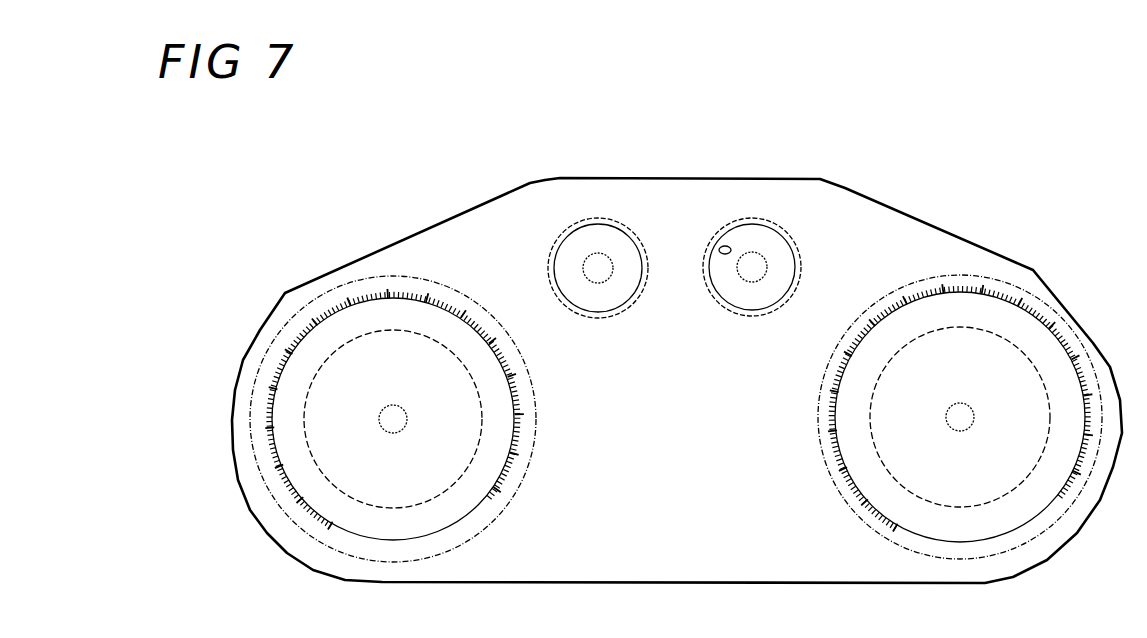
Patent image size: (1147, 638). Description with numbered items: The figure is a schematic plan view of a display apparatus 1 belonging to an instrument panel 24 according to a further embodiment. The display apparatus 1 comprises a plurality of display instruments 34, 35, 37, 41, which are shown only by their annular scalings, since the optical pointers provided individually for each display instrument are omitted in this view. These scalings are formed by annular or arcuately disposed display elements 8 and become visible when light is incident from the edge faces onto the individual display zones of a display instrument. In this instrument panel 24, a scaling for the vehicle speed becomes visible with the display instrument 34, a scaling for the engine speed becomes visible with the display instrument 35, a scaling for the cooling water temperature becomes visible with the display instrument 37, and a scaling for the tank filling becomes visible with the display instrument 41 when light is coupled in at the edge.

The display apparatus 1 is at (1072, 97).
The instrument panel 24 is at (852, 184).
The display elements 8 is at (306, 360).
The display instrument 34 is at (498, 505).
The display instrument 35 is at (857, 498).
The display instrument 37 is at (627, 297).
The display instrument 41 is at (737, 303).